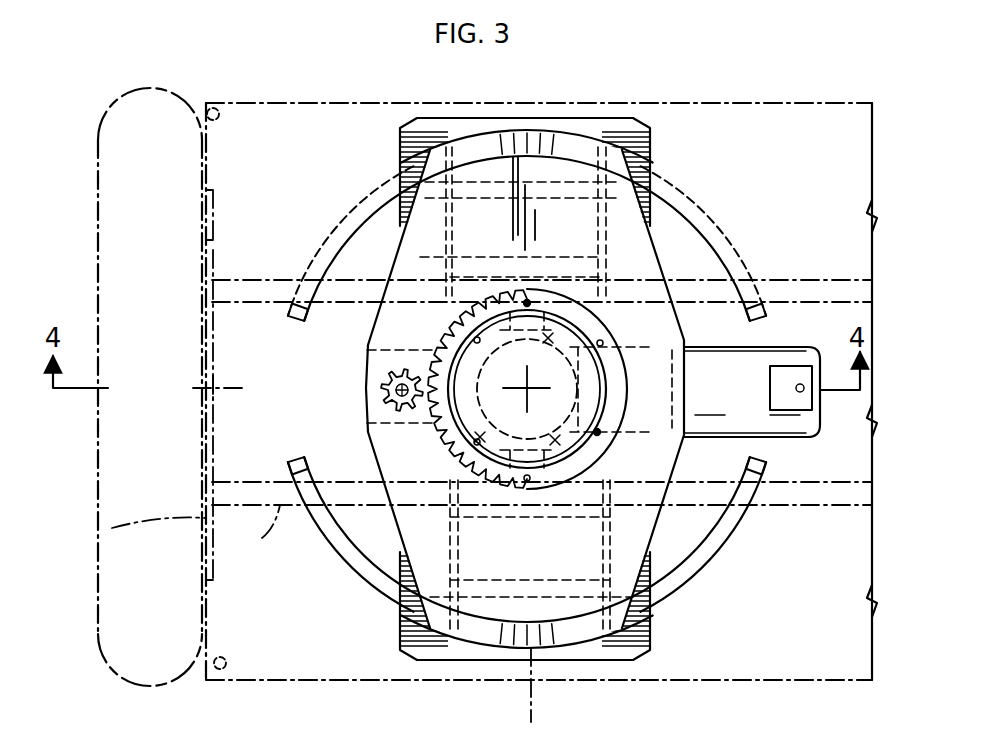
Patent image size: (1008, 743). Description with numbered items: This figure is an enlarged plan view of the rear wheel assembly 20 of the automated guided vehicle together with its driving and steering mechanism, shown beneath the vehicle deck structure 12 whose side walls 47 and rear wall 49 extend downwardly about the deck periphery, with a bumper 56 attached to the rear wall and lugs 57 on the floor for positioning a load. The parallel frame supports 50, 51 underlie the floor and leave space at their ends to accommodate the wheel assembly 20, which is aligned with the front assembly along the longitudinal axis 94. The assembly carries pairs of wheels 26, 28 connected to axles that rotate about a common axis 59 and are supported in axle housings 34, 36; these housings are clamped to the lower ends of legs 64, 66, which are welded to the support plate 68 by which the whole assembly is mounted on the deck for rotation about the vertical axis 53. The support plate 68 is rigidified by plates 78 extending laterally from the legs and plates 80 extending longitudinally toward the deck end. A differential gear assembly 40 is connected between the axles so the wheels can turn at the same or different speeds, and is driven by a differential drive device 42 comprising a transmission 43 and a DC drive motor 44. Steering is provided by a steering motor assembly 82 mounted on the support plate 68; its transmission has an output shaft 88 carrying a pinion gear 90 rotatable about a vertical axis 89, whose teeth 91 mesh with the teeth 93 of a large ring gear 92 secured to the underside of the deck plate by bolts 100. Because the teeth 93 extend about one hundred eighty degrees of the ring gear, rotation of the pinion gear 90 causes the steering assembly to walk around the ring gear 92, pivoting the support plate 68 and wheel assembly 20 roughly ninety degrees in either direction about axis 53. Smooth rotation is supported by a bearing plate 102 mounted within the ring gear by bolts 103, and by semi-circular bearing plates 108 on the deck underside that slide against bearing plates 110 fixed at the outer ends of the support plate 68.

The vehicle deck structure 12 is at (797, 108).
The rear wheel assembly 20 is at (790, 562).
The pair of wheels 26 is at (452, 633).
The pair of wheels 28 is at (600, 150).
The rear axle housing 34 is at (512, 521).
The rear axle housing 36 is at (549, 278).
The differential gear assembly 40 is at (410, 503).
The differential drive device 42 is at (718, 333).
The transmission 43 is at (716, 546).
The drive motor 44 is at (757, 415).
The side walls 47 is at (743, 103).
The rear wall 49 is at (112, 528).
The frame support 50 is at (262, 280).
The frame support 51 is at (262, 538).
The vertical axis 53 is at (547, 388).
The bumper 56 is at (118, 606).
The lug 57 is at (215, 108).
The common axis 59 is at (533, 703).
The leg 64 is at (577, 525).
The leg 66 is at (658, 163).
The support plate 68 is at (606, 320).
The rigidifying plate 78 is at (400, 184).
The rigidifying plate 80 is at (403, 263).
The steering motor assembly 82 is at (343, 348).
The output shaft 88 is at (445, 373).
The vertical axis 89 is at (400, 368).
The pinion gear 90 is at (400, 368).
The teeth 91 is at (395, 392).
The ring gear 92 is at (700, 213).
The teeth 93 is at (425, 313).
The longitudinal axis 94 is at (235, 390).
The bolts 100 is at (524, 300).
The bearing plate 102 is at (455, 412).
The bolts 103 is at (689, 349).
The semi-circular bearing plate 108 is at (700, 180).
The bearing plate 110 is at (500, 147).